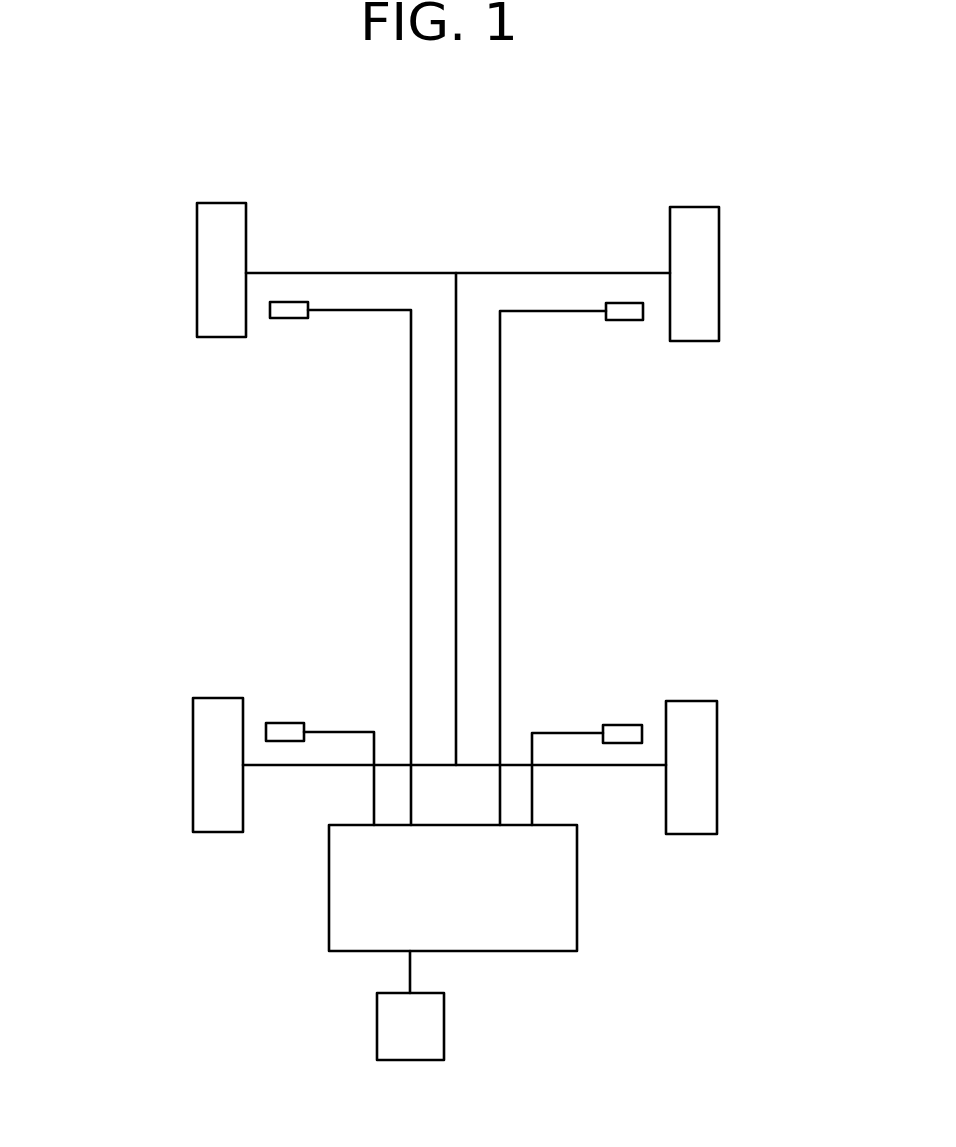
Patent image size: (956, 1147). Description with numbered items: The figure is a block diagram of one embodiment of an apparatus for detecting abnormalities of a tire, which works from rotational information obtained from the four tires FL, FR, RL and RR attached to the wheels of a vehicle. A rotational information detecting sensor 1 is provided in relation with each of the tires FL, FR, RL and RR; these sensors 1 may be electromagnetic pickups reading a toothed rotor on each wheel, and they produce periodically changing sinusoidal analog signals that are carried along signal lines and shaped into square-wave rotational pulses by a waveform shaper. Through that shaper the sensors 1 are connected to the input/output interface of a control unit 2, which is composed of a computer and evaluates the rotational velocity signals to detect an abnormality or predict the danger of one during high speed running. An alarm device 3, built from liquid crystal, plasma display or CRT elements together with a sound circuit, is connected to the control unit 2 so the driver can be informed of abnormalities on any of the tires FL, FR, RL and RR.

The rotational information detecting sensor 1 is at (280, 312).
The control unit 2 is at (563, 932).
The alarm device 3 is at (388, 1015).
The front left tire FL is at (208, 242).
The front right tire FR is at (703, 250).
The rear left tire RL is at (205, 747).
The rear right tire RR is at (702, 755).